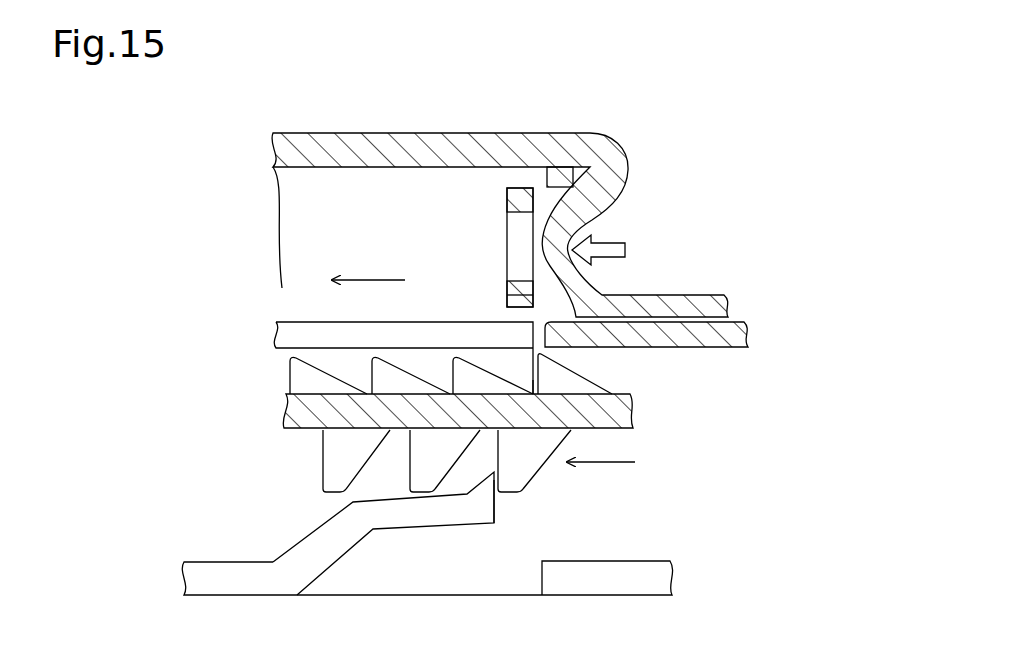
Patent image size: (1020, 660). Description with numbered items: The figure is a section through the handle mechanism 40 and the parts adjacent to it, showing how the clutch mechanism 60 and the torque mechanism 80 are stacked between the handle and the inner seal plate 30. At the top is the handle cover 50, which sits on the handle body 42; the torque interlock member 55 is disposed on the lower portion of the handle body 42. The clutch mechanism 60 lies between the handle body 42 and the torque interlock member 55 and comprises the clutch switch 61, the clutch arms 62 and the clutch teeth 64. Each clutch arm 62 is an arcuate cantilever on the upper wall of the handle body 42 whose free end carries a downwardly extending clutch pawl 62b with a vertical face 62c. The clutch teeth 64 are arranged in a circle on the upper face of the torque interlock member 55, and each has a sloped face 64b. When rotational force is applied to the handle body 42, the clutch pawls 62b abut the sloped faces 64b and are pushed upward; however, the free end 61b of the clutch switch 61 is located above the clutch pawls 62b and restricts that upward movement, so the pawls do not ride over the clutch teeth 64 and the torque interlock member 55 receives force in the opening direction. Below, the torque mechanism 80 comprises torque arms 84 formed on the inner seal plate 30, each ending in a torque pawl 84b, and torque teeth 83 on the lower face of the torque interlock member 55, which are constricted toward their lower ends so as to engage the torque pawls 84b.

The inner seal plate 30 is at (657, 580).
The handle mechanism 40 is at (703, 190).
The handle body 42 is at (747, 335).
The handle cover 50 is at (613, 150).
The torque interlock member 55 is at (632, 407).
The clutch mechanism 60 is at (168, 288).
The clutch switch 61 is at (514, 188).
The free end 61b is at (523, 293).
The clutch arms 62 is at (317, 330).
The clutch pawl 62b is at (550, 353).
The vertical face 62c is at (563, 430).
The clutch teeth 64 is at (465, 373).
The sloped face 64b is at (487, 362).
The torque mechanism 80 is at (173, 475).
The torque teeth 83 is at (513, 477).
The torque arm 84 is at (328, 540).
The torque pawl 84b is at (485, 505).